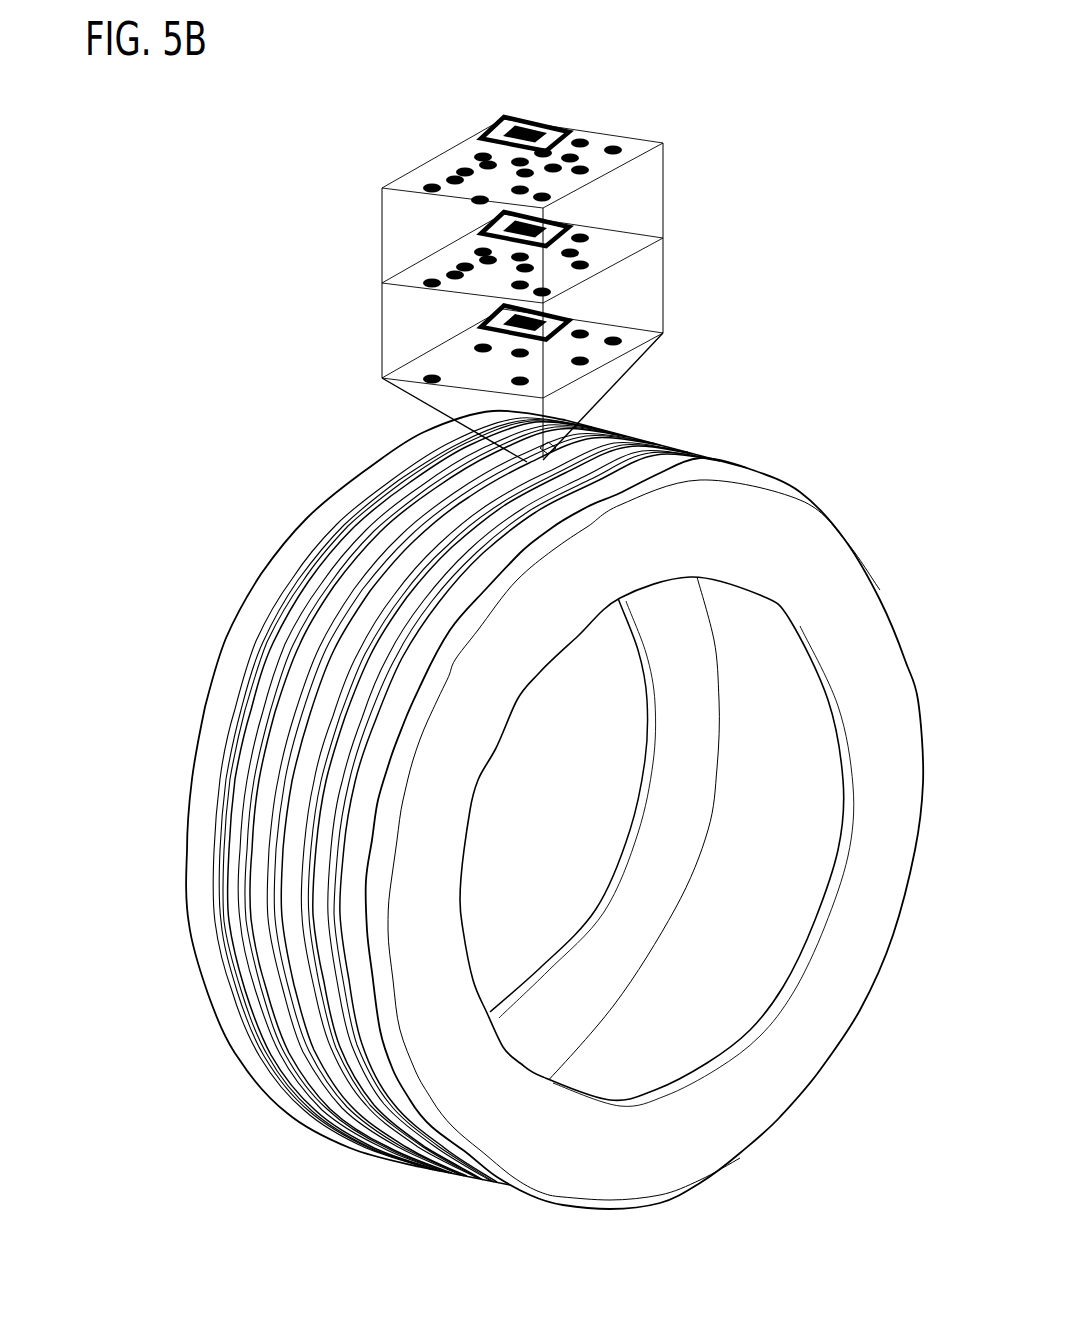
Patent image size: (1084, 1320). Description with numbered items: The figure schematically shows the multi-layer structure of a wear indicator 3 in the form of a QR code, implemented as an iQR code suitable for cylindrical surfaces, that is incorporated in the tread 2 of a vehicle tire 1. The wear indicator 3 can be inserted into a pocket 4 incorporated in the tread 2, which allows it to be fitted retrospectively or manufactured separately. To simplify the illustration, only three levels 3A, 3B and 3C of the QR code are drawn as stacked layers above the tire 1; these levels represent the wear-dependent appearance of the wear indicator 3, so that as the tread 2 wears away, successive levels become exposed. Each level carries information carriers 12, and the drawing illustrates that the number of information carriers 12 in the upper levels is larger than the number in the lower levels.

The vehicle tire 1 is at (520, 733).
The tread 2 is at (642, 443).
The wear indicator 3 is at (476, 232).
The first level of the QR code 3A is at (608, 137).
The second level of the QR code 3B is at (628, 238).
The third level of the QR code 3C is at (638, 333).
The pocket 4 is at (512, 460).
The information carriers 12 is at (487, 163).